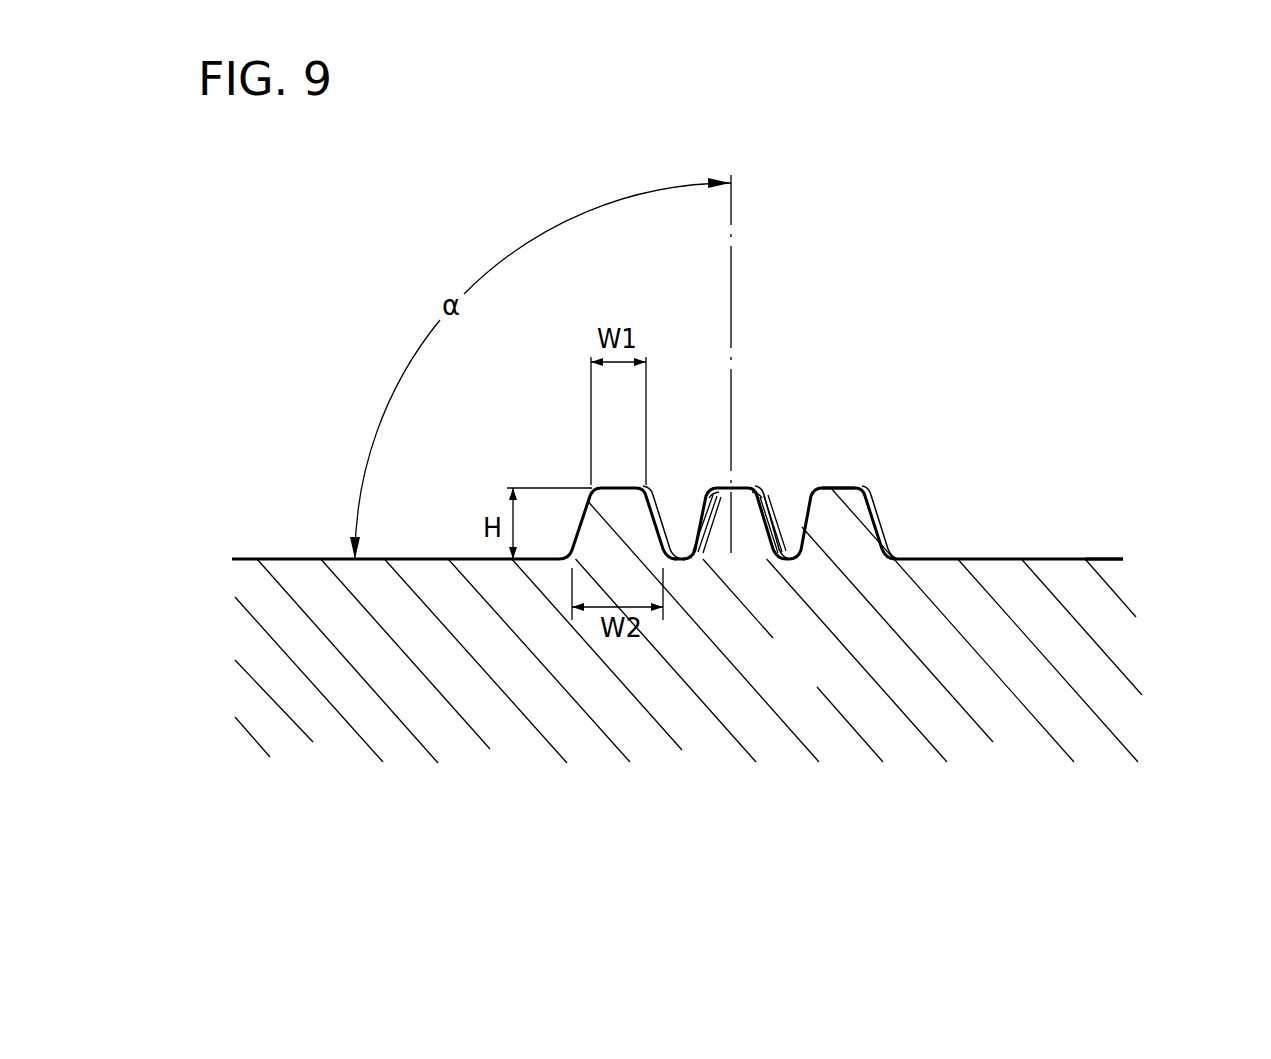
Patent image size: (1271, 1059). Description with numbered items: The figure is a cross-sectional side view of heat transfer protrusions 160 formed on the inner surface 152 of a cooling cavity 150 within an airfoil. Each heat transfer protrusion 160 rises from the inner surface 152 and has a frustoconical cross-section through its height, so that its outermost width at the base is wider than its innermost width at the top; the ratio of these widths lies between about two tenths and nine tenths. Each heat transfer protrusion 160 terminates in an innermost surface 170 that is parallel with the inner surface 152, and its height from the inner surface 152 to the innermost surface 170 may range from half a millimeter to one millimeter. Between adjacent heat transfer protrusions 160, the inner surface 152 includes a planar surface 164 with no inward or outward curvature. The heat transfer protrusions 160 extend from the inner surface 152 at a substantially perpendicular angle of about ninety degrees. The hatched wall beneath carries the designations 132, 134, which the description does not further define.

The cooling cavity 150 is at (948, 327).
The inner surface 152 is at (1048, 558).
The heat transfer protrusion 160 is at (889, 484).
The planar surface 164 is at (714, 572).
The innermost surface 170 is at (842, 487).
The substrate layer 132 is at (1098, 626).
The substrate layer 134 is at (1158, 610).